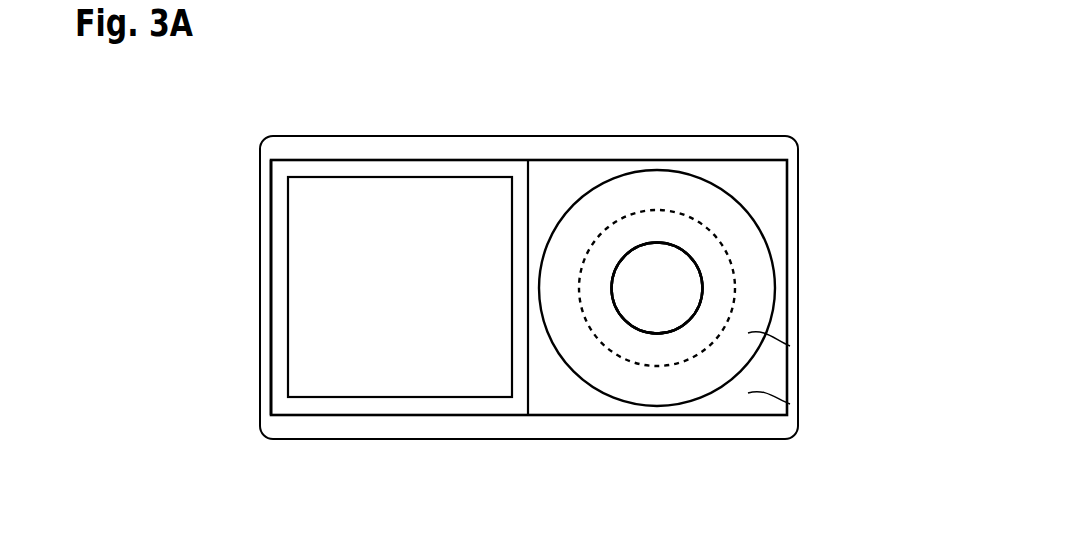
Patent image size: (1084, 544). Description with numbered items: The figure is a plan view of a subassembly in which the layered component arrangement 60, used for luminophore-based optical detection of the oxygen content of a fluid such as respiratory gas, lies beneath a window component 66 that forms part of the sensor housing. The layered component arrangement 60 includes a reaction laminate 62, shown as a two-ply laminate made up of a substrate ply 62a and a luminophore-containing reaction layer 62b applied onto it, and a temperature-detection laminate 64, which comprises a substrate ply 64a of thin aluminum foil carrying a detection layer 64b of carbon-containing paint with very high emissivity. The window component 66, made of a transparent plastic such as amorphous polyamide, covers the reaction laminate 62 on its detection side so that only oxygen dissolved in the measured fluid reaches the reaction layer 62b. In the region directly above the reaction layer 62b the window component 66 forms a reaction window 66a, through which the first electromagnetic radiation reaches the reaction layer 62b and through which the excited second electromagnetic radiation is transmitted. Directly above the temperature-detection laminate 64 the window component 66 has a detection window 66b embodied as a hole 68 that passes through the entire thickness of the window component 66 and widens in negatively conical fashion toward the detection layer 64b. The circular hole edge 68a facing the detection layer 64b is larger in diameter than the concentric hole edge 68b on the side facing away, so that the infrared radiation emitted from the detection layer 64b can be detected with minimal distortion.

The layered component arrangement 60 is at (551, 425).
The reaction laminate 62 is at (401, 147).
The substrate ply 62a is at (478, 404).
The reaction layer 62b is at (421, 301).
The temperature-detection laminate 64 is at (669, 148).
The substrate ply 64a is at (790, 404).
The detection layer 64b is at (790, 346).
The window component 66 is at (290, 148).
The reaction window 66a is at (316, 302).
The detection window 66b is at (677, 281).
The hole 68 is at (657, 288).
The hole edge 68a is at (617, 218).
The hole edge 68b is at (655, 245).